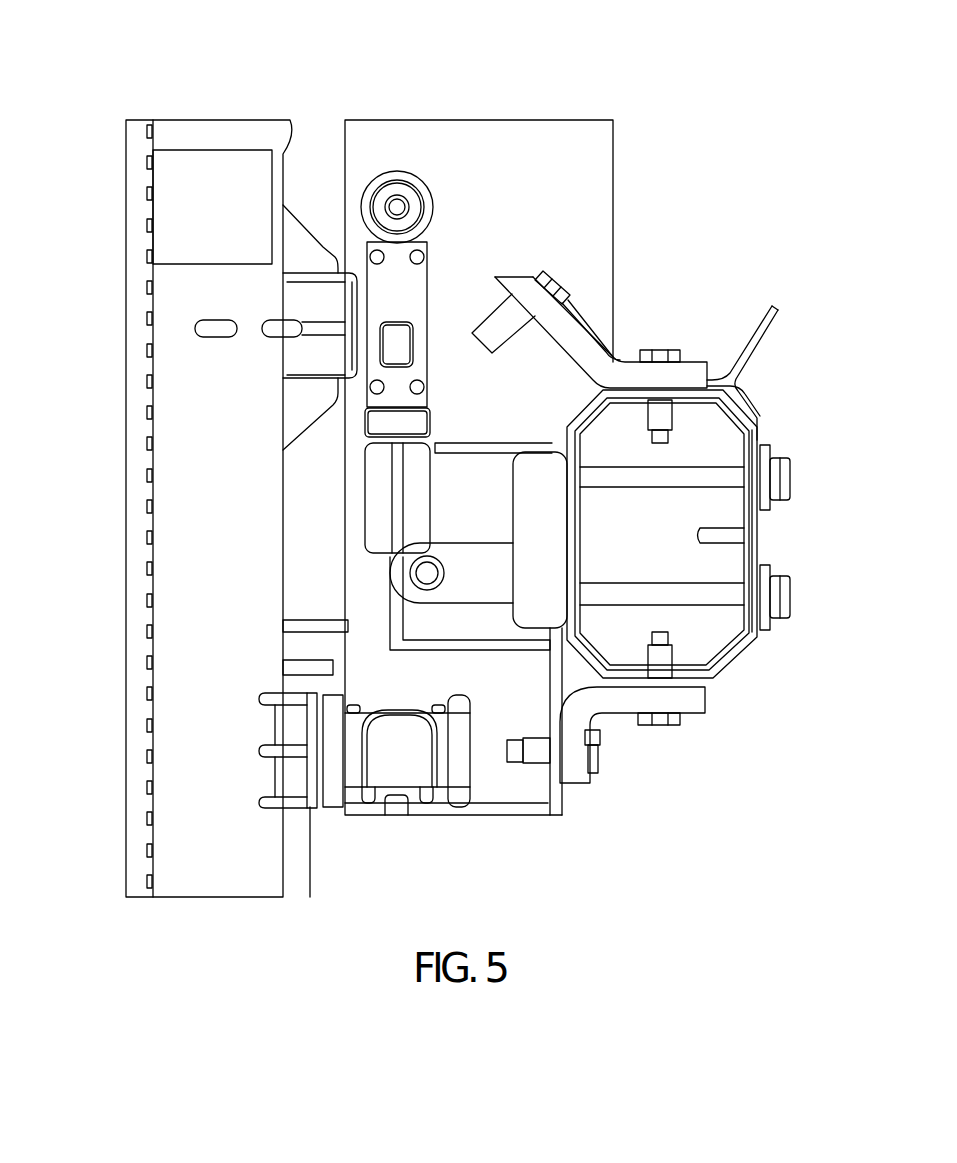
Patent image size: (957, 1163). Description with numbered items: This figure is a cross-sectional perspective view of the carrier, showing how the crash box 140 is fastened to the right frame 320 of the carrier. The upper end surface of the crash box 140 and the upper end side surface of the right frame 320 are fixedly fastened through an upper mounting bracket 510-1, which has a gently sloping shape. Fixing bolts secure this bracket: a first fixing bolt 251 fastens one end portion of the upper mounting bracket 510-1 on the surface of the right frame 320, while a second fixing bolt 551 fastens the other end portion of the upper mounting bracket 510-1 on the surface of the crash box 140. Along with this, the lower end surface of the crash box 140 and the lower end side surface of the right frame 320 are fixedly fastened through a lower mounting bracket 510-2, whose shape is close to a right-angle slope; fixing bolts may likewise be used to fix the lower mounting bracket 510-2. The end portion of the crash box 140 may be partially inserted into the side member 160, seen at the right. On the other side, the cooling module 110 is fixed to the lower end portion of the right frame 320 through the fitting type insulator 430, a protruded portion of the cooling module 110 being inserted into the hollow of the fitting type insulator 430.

The cooling module 110 is at (245, 861).
The right frame 320 is at (653, 145).
The 1-1 fixing bolt 251 is at (548, 280).
The upper mounting bracket 510-1 is at (565, 328).
The 1-2 fixing bolt 551 is at (660, 350).
The side member 160 is at (766, 337).
The crash box 140 is at (748, 390).
The lower mounting bracket 510-2 is at (657, 725).
The fitting type insulator 430 is at (334, 705).